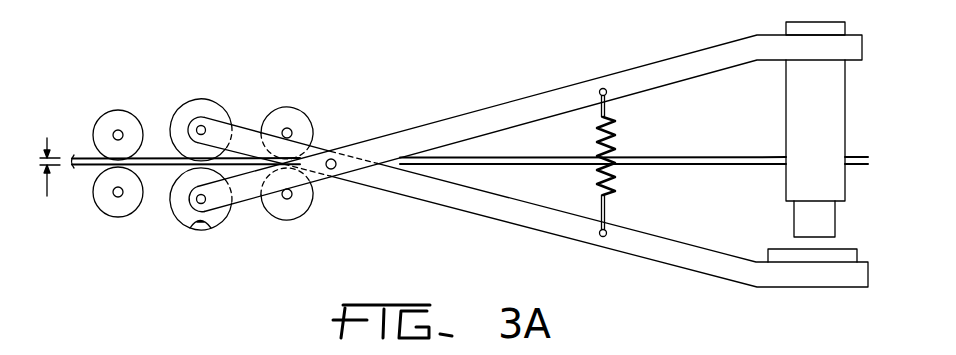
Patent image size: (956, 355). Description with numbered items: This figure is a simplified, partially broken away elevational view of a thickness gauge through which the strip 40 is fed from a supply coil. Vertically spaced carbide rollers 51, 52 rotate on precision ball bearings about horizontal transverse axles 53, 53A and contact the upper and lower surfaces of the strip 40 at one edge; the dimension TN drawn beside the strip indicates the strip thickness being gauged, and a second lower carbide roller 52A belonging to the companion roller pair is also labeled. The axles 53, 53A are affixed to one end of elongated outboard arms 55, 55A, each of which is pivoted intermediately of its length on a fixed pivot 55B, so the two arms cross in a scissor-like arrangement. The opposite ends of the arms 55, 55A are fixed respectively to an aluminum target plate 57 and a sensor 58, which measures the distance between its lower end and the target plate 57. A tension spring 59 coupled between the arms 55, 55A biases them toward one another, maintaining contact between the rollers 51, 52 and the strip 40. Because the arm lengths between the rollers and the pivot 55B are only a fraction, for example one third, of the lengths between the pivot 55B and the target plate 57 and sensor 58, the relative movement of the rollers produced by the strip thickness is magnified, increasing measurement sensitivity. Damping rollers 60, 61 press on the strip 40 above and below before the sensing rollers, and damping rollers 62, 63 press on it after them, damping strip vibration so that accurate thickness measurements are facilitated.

The strip 40 is at (86, 157).
The nominal thickness dimension TN is at (53, 187).
The carbide roller 51 is at (182, 103).
The carbide roller 52 is at (183, 214).
The carbide roller 52A is at (200, 227).
The axle 53 is at (207, 121).
The axle 53A is at (208, 205).
The outboard arm 55 is at (494, 219).
The outboard arm 55A is at (502, 105).
The fixed pivot 55B is at (333, 170).
The aluminum target plate 57 is at (840, 258).
The sensor 58 is at (786, 120).
The tension spring 59 is at (613, 147).
The damping roller 60 is at (309, 119).
The damping roller 61 is at (293, 219).
The damping roller 62 is at (108, 111).
The damping roller 63 is at (109, 216).